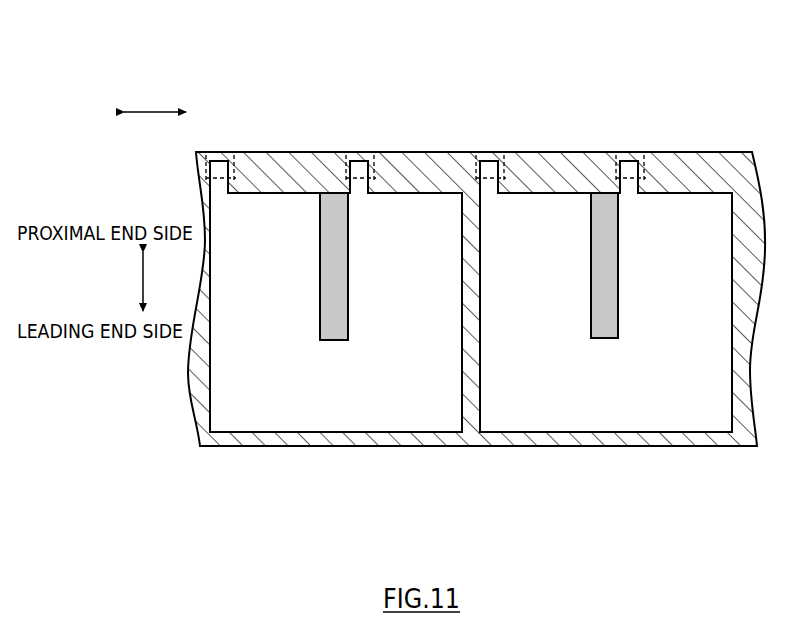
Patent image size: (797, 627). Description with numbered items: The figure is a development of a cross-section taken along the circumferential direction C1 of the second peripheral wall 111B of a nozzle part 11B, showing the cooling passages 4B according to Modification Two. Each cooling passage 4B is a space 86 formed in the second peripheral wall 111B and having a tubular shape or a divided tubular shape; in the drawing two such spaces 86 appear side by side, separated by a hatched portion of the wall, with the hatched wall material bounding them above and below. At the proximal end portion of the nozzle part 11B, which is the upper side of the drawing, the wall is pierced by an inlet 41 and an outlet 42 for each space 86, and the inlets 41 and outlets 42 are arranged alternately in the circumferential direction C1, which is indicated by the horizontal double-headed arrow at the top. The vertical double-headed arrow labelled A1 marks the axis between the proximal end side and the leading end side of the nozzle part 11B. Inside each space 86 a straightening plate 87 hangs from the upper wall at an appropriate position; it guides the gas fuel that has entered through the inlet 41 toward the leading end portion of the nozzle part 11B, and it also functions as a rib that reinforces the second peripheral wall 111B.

The inlet 41 is at (258, 150).
The outlet 42 is at (397, 152).
The space 86 is at (408, 364).
The straightening plate 87 is at (320, 291).
The cooling passage 4B is at (367, 407).
The nozzle part 11B is at (298, 452).
The second peripheral wall 111B is at (238, 446).
The circumferential direction C1 is at (160, 112).
The axial direction A1 is at (143, 290).